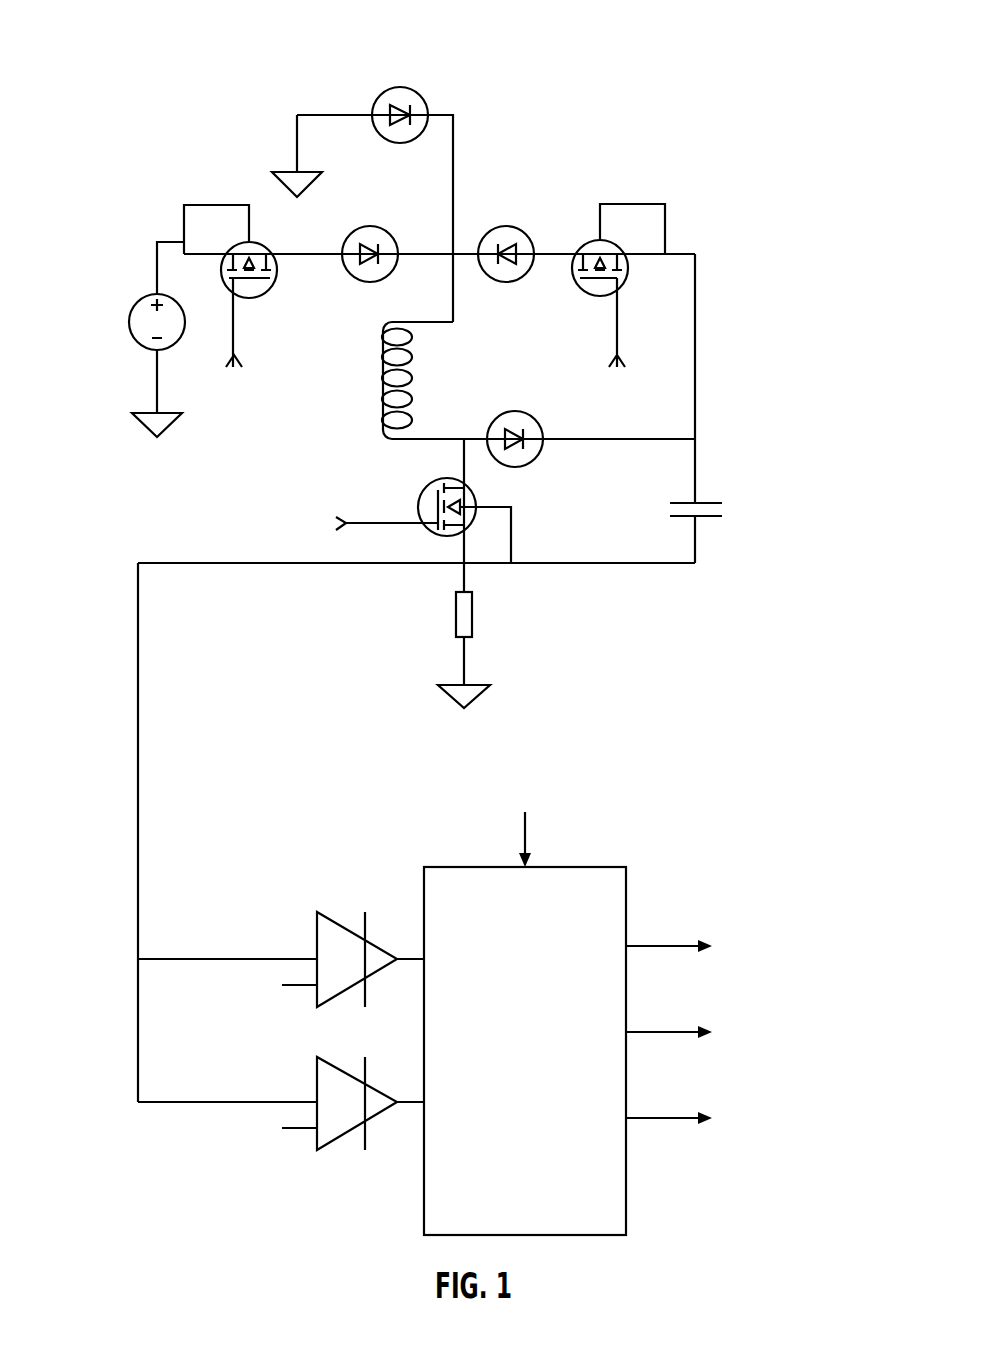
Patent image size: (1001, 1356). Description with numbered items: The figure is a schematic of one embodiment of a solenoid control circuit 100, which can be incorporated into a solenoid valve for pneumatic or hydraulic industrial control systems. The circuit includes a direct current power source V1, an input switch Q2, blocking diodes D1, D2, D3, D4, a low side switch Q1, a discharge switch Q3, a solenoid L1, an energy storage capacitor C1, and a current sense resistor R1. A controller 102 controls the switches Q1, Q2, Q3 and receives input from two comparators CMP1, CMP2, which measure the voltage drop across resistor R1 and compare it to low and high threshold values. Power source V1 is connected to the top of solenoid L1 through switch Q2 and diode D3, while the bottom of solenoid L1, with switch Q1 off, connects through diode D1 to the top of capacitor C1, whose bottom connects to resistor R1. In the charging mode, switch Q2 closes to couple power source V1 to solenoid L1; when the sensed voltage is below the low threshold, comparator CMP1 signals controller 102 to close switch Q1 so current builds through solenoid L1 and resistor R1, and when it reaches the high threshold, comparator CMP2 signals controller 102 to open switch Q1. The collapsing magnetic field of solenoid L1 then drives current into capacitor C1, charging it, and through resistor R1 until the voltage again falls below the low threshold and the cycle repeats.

The solenoid control circuit 100 is at (178, 38).
The controller 102 is at (545, 1064).
The power source V1 is at (139, 339).
The low side switch Q1 is at (423, 515).
The input switch Q2 is at (263, 286).
The discharge switch Q3 is at (625, 285).
The blocking diode D1 is at (591, 456).
The blocking diode D2 is at (530, 238).
The blocking diode D3 is at (410, 238).
The blocking diode D4 is at (362, 204).
The solenoid L1 is at (378, 380).
The energy storage capacitor C1 is at (677, 408).
The current sense resistor R1 is at (451, 650).
The comparator CMP1 is at (281, 1084).
The comparator CMP2 is at (281, 941).